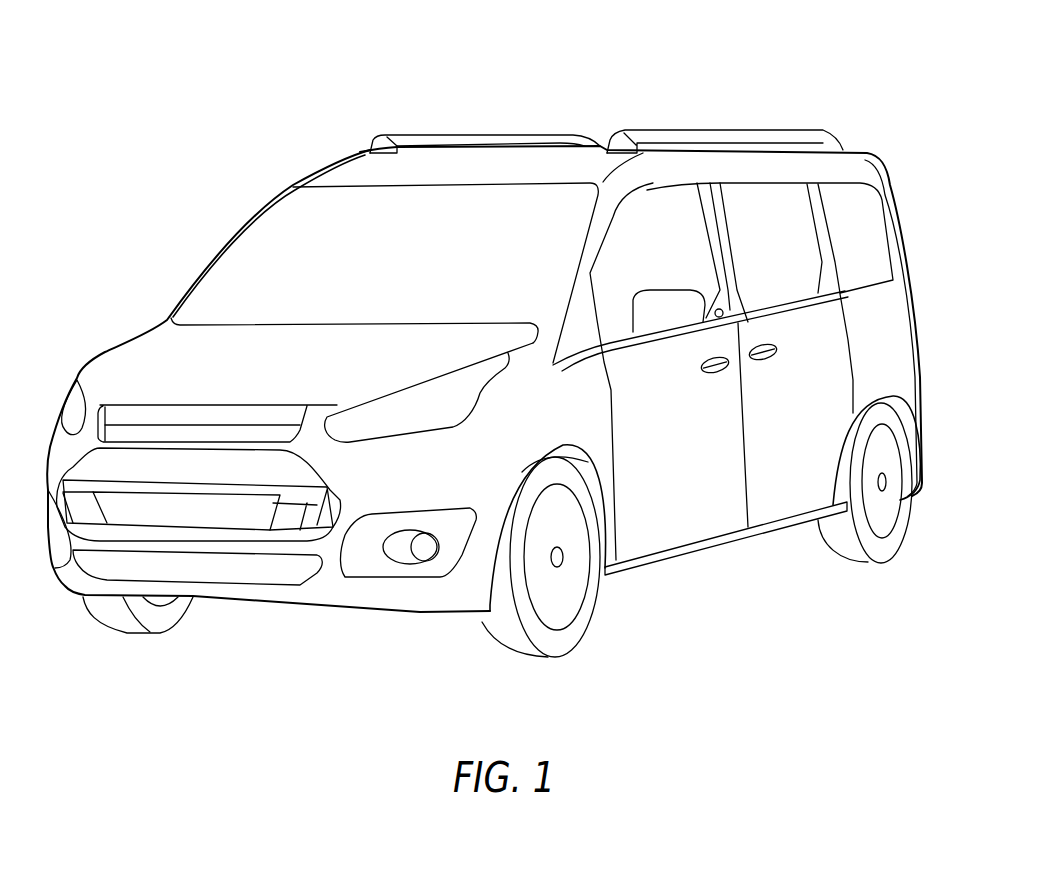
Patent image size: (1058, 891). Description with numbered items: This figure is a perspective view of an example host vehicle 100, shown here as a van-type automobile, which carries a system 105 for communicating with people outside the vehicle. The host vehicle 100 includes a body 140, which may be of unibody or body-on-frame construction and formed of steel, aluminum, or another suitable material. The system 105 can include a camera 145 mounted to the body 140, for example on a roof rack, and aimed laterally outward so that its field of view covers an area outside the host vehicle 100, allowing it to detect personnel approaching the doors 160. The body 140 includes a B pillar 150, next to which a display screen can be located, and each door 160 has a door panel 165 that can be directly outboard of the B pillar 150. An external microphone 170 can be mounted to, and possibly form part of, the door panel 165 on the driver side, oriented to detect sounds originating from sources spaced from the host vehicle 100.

The host vehicle 100 is at (242, 97).
The system 105 is at (909, 224).
The body 140 is at (650, 570).
The camera 145 is at (662, 137).
The B pillar 150 is at (712, 226).
The door 160 is at (688, 510).
The door panel 165 is at (730, 238).
The external microphone 170 is at (724, 314).